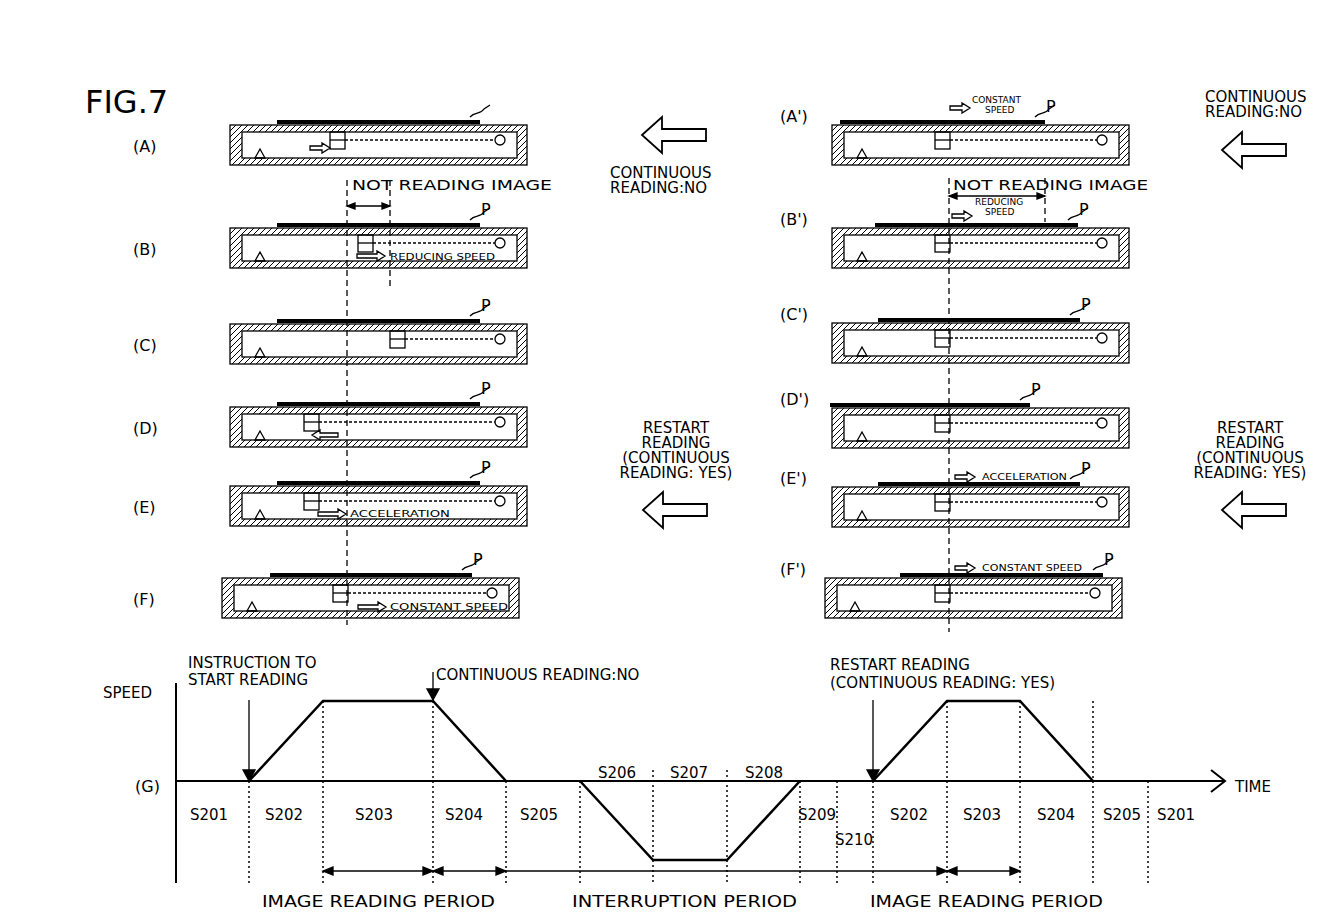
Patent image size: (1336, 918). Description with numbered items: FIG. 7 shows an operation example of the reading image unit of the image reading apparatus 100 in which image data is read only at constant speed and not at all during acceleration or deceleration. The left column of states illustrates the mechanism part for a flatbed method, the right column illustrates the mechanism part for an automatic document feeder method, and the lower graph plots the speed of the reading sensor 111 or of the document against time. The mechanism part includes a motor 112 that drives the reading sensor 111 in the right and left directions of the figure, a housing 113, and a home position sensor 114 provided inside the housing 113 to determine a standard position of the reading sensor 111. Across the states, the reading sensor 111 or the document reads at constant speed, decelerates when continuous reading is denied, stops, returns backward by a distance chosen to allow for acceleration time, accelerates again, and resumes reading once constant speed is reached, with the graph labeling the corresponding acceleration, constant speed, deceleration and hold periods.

The image reading apparatus 100 is at (274, 105).
The reading sensor 111 is at (623, 389).
The motor 112 is at (828, 368).
The housing 113 is at (646, 371).
The home position sensor 114 is at (557, 398).